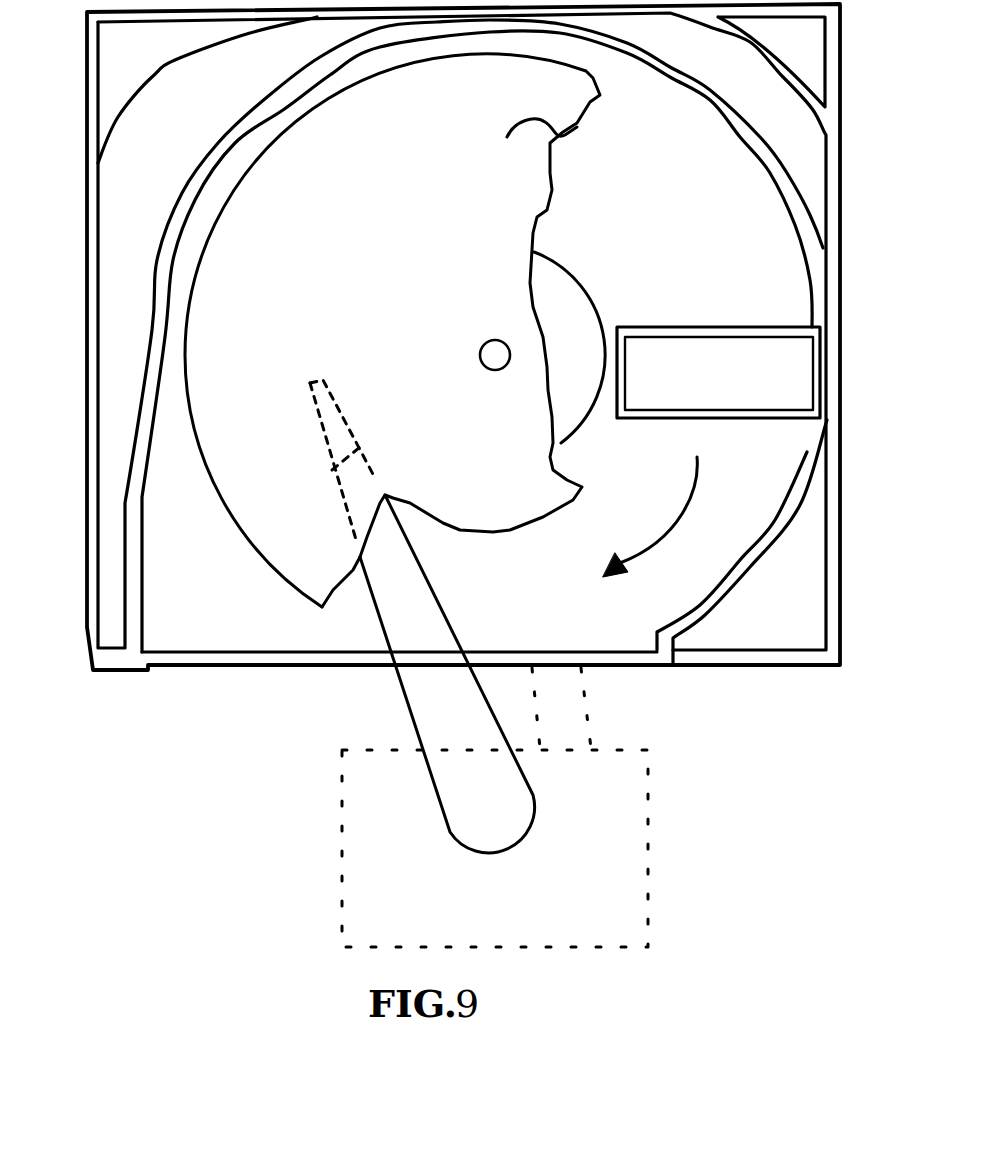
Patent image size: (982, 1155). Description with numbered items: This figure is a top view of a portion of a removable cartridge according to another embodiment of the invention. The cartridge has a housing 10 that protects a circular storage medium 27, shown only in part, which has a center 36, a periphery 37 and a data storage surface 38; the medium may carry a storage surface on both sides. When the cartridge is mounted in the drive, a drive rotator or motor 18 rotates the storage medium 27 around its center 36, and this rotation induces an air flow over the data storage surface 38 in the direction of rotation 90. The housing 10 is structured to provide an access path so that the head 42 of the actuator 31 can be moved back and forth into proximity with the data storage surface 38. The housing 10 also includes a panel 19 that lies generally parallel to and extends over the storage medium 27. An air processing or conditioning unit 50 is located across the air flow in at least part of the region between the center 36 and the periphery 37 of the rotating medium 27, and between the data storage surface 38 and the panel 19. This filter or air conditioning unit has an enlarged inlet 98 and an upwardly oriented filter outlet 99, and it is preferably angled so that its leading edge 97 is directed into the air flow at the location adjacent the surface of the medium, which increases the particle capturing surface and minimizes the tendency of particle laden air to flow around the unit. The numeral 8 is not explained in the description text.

The motor/drive unit 8 is at (607, 800).
The housing 10 is at (96, 600).
The drive rotator or motor 18 is at (562, 700).
The panel 19 is at (246, 632).
The circular storage medium 27 is at (319, 260).
The actuator 31 is at (508, 832).
The center 36 is at (480, 364).
The periphery 37 is at (266, 535).
The data storage surface 38 is at (555, 191).
The head 42 is at (331, 427).
The air processing or conditioning unit 50 is at (780, 354).
The direction of rotation 90 is at (680, 492).
The leading edge 97 is at (763, 327).
The enlarged inlet 98 is at (690, 320).
The upwardly oriented filter outlet 99 is at (724, 362).